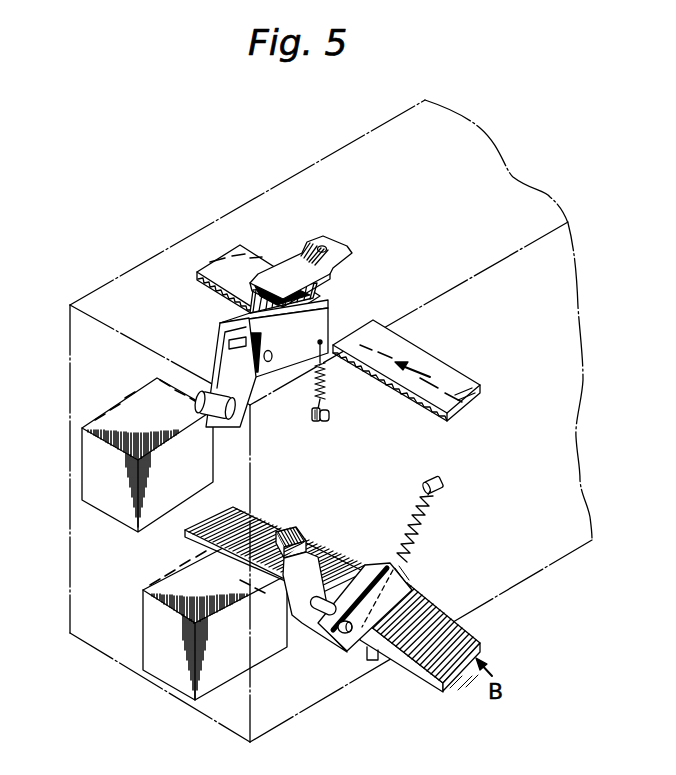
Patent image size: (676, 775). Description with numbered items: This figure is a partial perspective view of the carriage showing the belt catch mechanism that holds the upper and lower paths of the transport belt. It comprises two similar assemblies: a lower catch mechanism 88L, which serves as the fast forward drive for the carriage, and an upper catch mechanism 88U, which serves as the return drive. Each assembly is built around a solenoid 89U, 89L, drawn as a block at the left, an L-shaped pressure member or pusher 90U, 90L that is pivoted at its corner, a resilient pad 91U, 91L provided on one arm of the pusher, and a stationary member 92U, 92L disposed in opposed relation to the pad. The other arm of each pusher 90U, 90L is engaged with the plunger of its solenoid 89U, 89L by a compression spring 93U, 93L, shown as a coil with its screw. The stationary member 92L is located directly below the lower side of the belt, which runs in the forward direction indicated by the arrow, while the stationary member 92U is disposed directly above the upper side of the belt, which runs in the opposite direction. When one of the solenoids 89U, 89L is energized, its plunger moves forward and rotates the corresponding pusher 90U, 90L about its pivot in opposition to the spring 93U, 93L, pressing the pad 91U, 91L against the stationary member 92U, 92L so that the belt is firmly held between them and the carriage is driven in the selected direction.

The upper catch mechanism 88U is at (128, 376).
The solenoid 89U is at (98, 490).
The L-shaped pressure member or pusher 90U is at (325, 325).
The resilient pad 91U is at (318, 296).
The stationary member 92U is at (282, 277).
The compression spring 93U is at (328, 382).
The lower catch mechanism 88L is at (322, 702).
The solenoid 89L is at (177, 673).
The L-shaped pressure member or pusher 90L is at (403, 585).
The resilient pad 91L is at (412, 598).
The stationary member 92L is at (370, 648).
The compression spring 93L is at (423, 527).